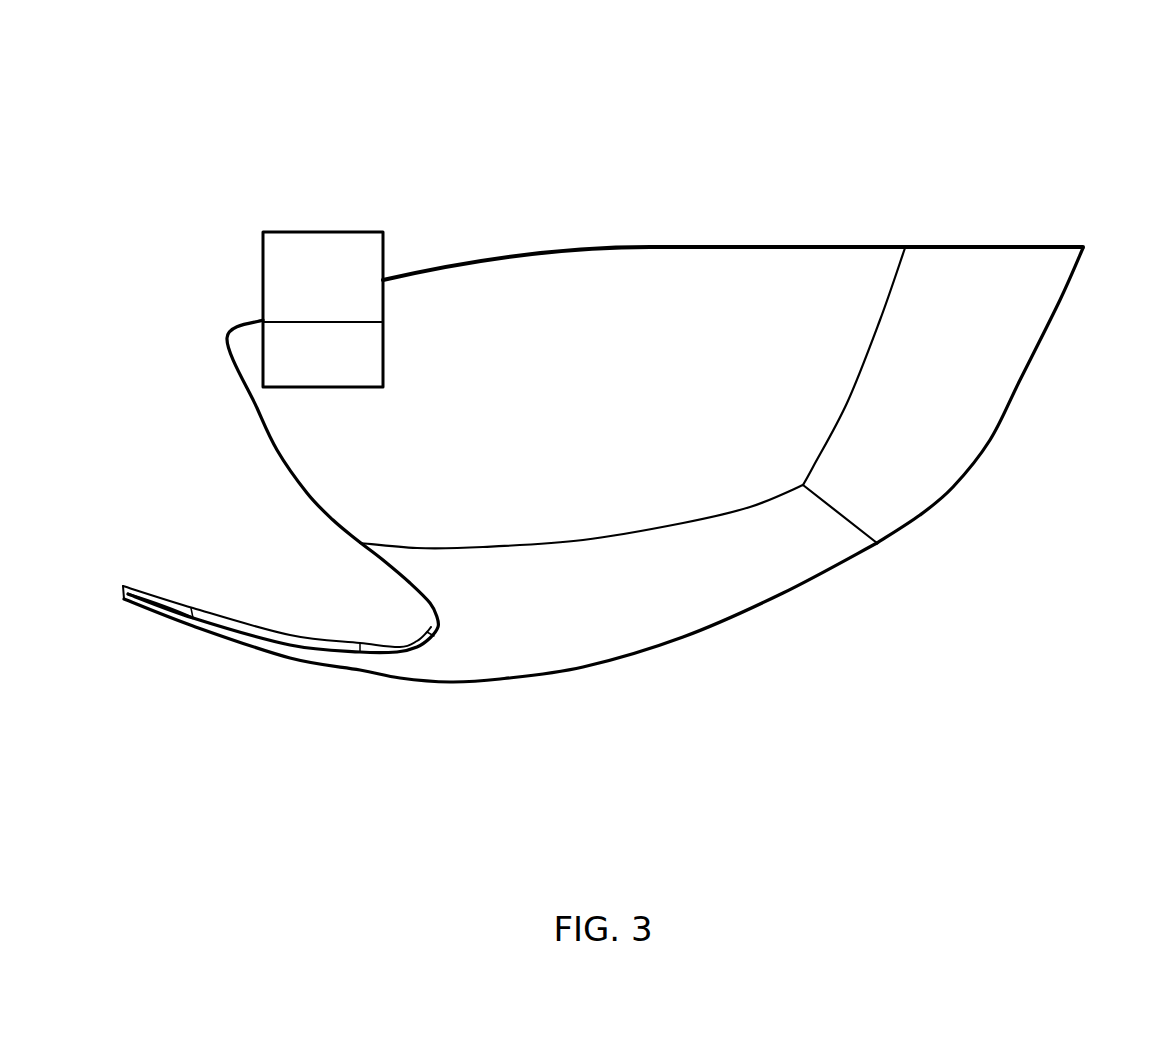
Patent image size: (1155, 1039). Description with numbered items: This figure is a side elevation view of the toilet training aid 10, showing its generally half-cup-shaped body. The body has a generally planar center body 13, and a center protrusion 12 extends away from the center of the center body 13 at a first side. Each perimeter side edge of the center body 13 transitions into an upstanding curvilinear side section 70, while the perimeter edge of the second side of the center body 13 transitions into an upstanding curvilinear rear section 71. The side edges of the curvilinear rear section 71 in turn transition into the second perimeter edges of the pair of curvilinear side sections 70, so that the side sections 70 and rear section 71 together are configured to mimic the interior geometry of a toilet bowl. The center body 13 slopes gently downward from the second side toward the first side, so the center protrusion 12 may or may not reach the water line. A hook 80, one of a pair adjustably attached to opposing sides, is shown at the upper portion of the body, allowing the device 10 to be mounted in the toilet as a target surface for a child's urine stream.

The toilet training aid 10 is at (177, 126).
The center protrusion 12 is at (162, 612).
The center body 13 is at (555, 602).
The curvilinear side section 70 is at (712, 292).
The curvilinear rear section 71 is at (983, 385).
The hook 80 is at (323, 229).